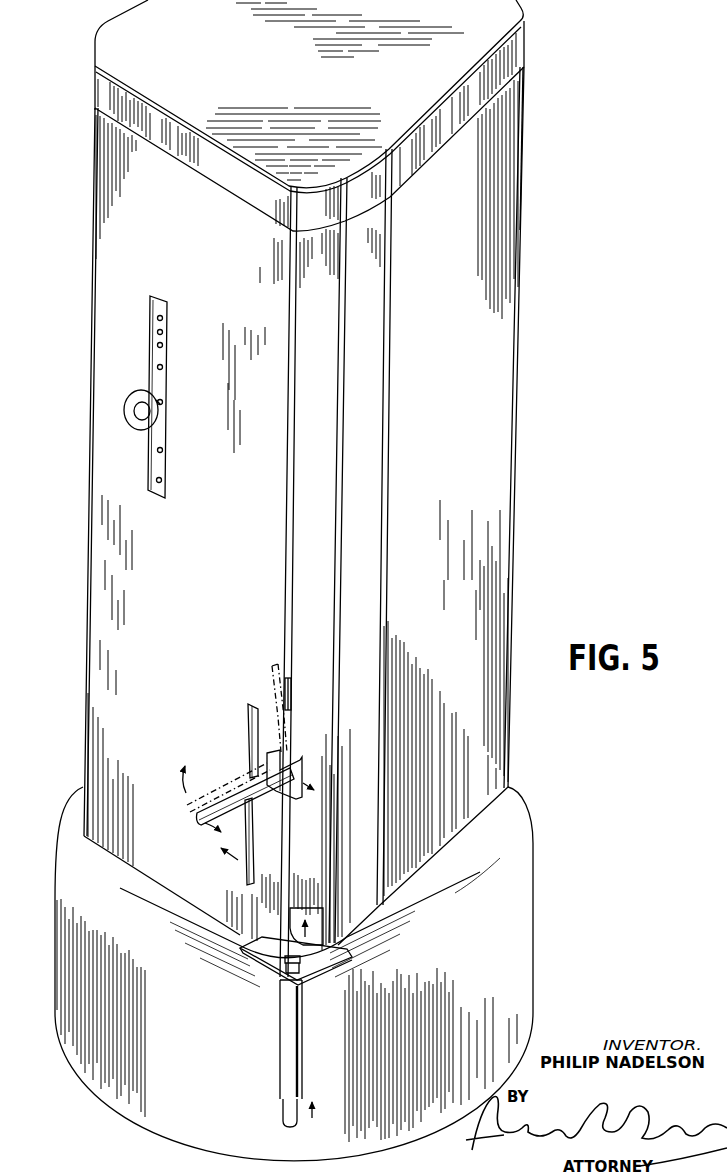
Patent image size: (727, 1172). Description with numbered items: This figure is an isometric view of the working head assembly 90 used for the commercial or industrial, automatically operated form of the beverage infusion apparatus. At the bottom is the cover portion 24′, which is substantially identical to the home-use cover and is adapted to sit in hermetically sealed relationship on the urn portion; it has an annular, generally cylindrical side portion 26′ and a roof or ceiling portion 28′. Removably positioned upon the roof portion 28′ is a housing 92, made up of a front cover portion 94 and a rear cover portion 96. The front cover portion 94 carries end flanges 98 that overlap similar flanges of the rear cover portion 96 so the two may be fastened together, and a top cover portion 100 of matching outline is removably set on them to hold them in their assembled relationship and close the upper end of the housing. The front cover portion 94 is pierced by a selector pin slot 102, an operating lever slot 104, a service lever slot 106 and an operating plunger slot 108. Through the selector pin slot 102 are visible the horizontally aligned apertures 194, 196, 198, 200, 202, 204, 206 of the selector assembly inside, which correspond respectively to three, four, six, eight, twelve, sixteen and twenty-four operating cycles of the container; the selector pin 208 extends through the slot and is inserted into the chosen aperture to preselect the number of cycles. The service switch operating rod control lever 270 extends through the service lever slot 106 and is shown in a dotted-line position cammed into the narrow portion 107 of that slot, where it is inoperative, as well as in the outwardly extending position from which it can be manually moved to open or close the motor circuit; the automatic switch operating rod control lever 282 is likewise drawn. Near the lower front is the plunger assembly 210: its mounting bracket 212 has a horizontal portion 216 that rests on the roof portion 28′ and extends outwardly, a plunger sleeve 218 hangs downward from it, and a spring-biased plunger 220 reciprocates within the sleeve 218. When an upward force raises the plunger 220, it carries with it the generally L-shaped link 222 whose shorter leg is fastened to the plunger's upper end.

The top cover portion 100 is at (222, 65).
The working head assembly 90 is at (528, 454).
The housing 92 is at (520, 210).
The front cover portion 94 is at (84, 677).
The rear cover portion 96 is at (514, 297).
The end flanges 98 is at (381, 500).
The selector pin slot 102 is at (168, 356).
The aperture 206 is at (157, 318).
The aperture 204 is at (157, 333).
The aperture 202 is at (157, 347).
The aperture 200 is at (164, 367).
The aperture 198 is at (163, 403).
The aperture 196 is at (163, 450).
The aperture 194 is at (162, 480).
The selector pin 208 is at (124, 417).
The narrow portion of the service lever slot 107 is at (292, 690).
The operating lever slot 104 is at (248, 717).
The service lever slot 106 is at (293, 798).
The service switch operating rod control lever 270 is at (270, 675).
The automatic switch operating rod control lever 282 is at (183, 803).
The operating plunger slot 108 is at (322, 906).
The horizontal portion 216 is at (270, 962).
The mounting bracket 212 is at (356, 957).
The plunger assembly 210 is at (273, 1060).
The plunger sleeve 218 is at (302, 1060).
The plunger 220 is at (285, 1118).
The link 222 is at (300, 929).
The cover portion 24′ is at (538, 967).
The side portion 26′ is at (533, 907).
The roof portion 28′ is at (473, 853).